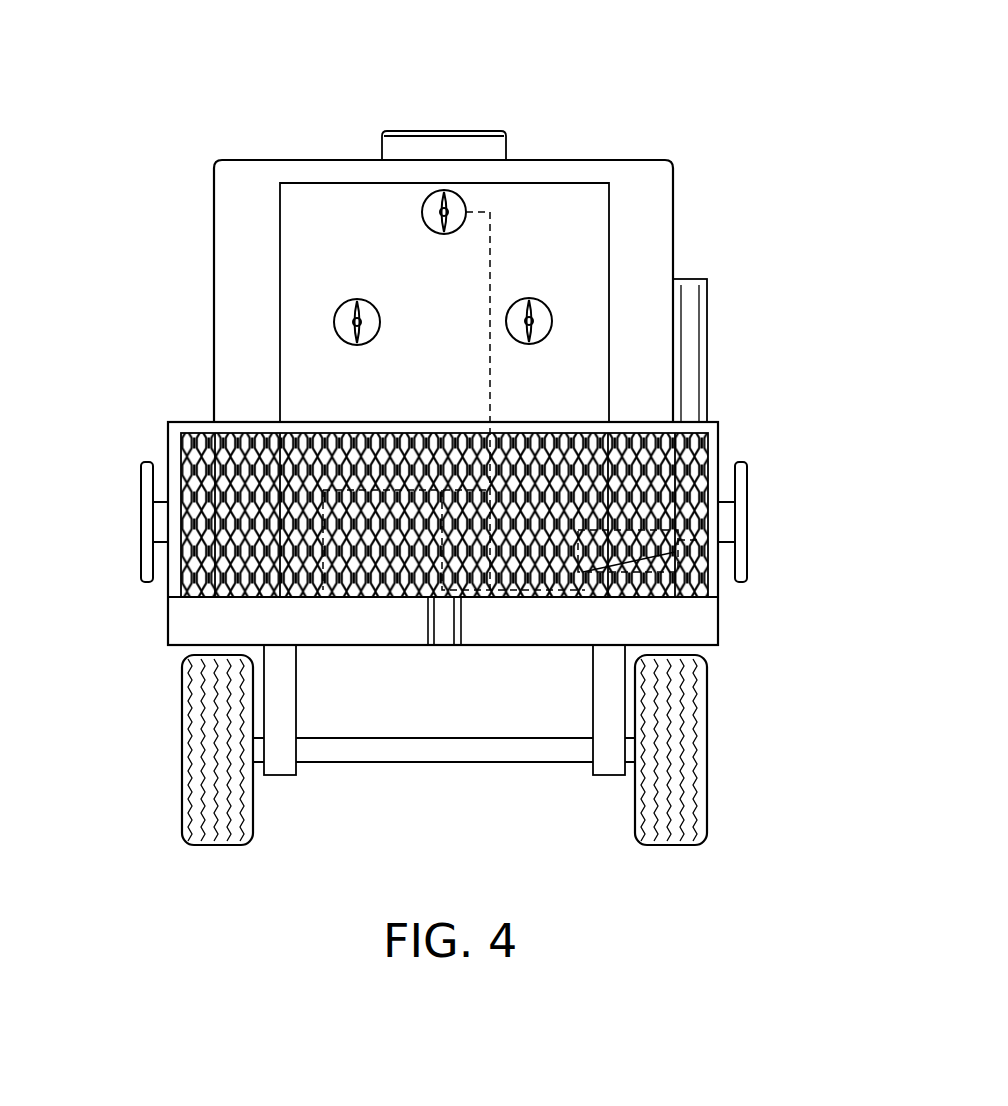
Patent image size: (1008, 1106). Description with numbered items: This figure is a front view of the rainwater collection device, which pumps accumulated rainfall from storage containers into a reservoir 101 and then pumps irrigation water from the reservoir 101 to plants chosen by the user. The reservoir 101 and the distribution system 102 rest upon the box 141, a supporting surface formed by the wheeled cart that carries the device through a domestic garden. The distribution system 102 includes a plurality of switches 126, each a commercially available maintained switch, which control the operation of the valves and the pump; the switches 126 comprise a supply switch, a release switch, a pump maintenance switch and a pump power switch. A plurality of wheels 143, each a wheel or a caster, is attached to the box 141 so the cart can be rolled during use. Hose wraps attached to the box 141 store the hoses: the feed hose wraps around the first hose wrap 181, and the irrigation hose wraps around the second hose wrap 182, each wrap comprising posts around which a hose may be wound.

The reservoir 101 is at (673, 209).
The distribution system 102 is at (551, 210).
The plurality of switches 126 is at (507, 318).
The box 141 is at (695, 470).
The plurality of wheels 143 is at (632, 827).
The first hose wrap 181 is at (141, 508).
The second hose wrap 182 is at (747, 521).